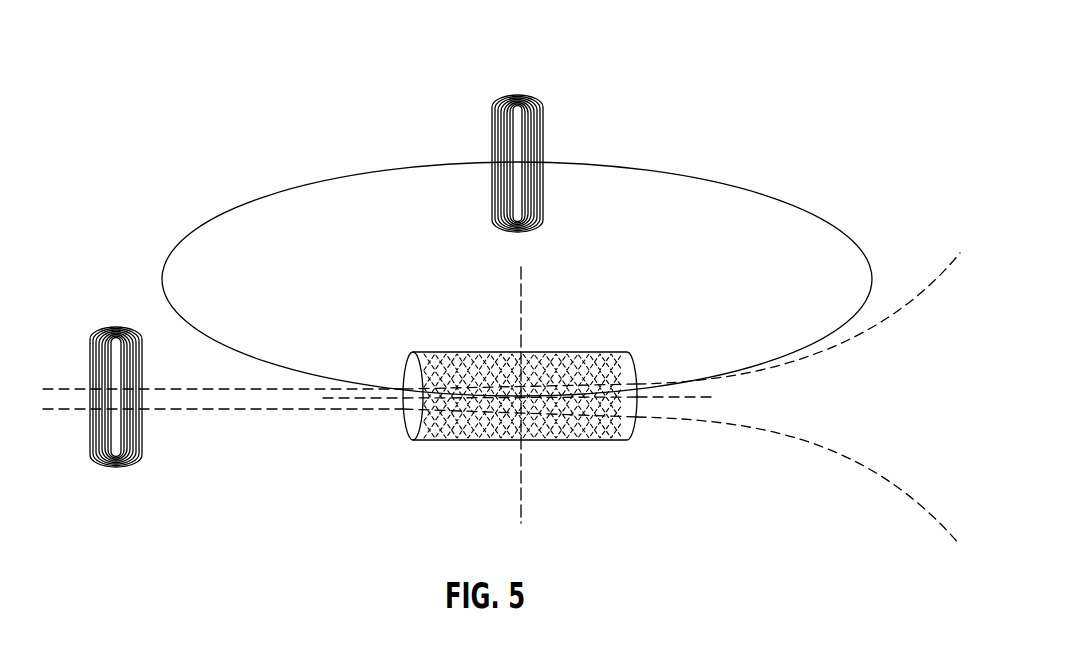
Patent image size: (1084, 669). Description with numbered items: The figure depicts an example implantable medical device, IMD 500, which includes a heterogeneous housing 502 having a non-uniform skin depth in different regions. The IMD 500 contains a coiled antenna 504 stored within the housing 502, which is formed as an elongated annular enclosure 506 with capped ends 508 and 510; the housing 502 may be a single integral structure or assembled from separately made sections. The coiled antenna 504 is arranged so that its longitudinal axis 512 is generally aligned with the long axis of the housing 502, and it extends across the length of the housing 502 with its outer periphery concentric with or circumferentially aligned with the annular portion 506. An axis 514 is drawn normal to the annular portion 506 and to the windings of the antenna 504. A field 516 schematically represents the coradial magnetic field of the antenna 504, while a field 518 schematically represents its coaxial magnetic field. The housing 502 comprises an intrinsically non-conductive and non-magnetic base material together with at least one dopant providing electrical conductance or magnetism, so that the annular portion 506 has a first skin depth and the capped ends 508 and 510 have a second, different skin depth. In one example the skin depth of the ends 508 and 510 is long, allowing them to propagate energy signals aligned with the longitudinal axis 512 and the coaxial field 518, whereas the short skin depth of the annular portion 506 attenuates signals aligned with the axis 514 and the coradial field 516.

The IMD 500 is at (708, 40).
The heterogeneous housing 502 is at (607, 440).
The coiled antenna 504 is at (410, 378).
The annular portion 506 is at (483, 351).
The capped end 508 is at (410, 430).
The capped end 510 is at (634, 356).
The longitudinal axis 512 is at (690, 404).
The axis 514 is at (515, 503).
The coradial magnetic field 516 is at (636, 166).
The coaxial magnetic field 518 is at (235, 412).